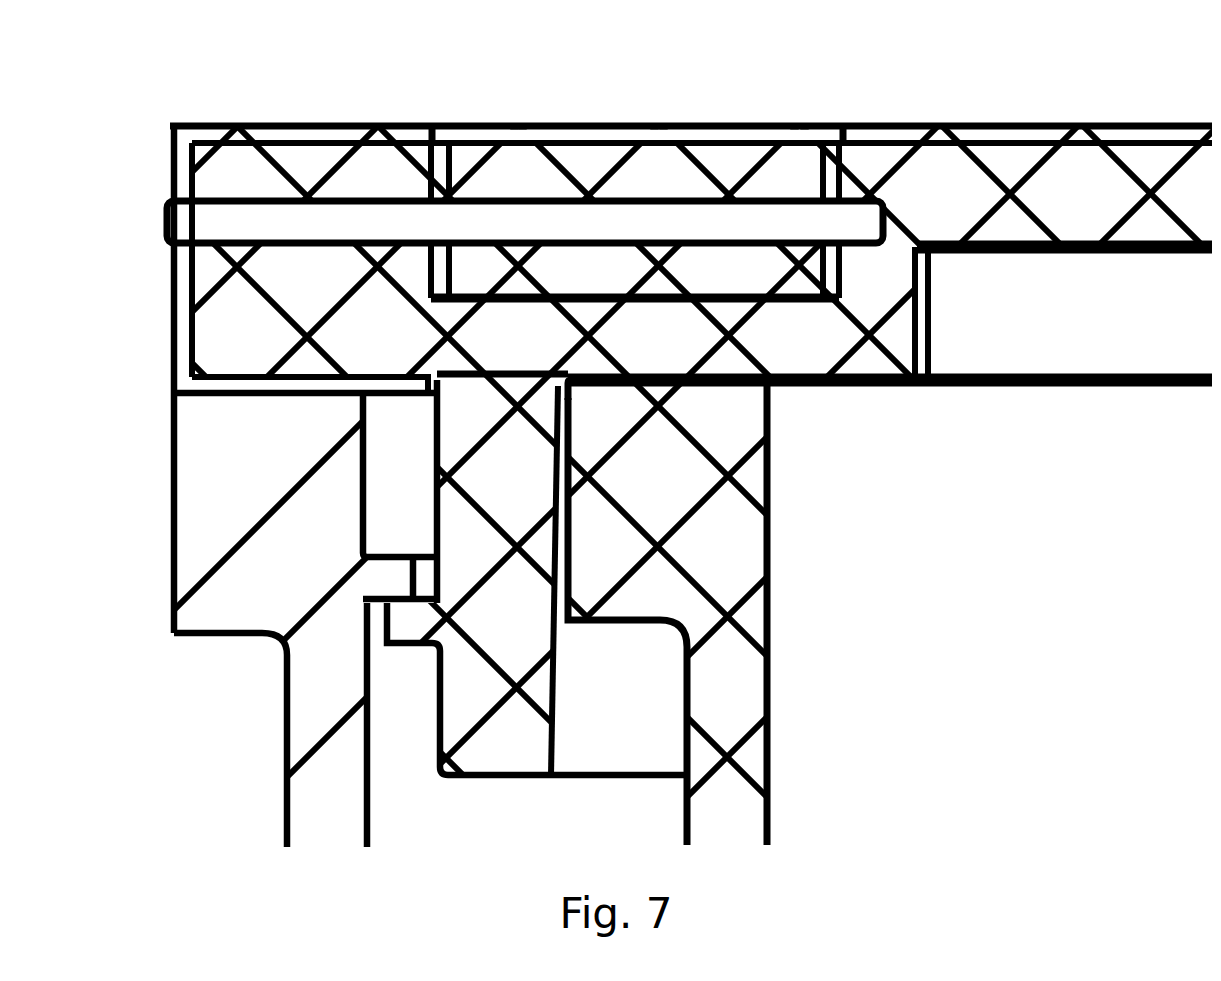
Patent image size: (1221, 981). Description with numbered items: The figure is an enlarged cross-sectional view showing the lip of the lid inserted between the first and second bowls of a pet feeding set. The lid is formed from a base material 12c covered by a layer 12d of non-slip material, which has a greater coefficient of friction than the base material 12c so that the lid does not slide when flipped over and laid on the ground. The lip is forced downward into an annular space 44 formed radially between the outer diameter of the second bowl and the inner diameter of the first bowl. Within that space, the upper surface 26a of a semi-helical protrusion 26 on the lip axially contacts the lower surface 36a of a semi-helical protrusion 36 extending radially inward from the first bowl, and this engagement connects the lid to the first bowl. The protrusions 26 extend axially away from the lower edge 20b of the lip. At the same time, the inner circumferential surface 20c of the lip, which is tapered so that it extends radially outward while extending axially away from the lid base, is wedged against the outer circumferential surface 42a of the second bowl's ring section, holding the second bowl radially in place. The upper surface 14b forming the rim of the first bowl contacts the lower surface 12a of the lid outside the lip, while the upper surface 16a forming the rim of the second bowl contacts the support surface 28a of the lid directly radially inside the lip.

The lower surface of lid 12a is at (265, 390).
The base material 12c is at (368, 170).
The layer of non-slip material 12d is at (316, 122).
The upper surface of first bowl 14b is at (240, 400).
The upper surface of second bowl 16a is at (612, 385).
The lower edge of annular lip 20b is at (485, 785).
The inner circumferential surface of lip 20c is at (557, 658).
The protrusion 26 is at (367, 657).
The upper surface of protrusion 26a is at (403, 622).
The support surface 28a is at (663, 363).
The protrusion 36 is at (387, 562).
The lower surface of protrusion 36a is at (403, 580).
The outer circumferential surface of ring section 42a is at (575, 560).
The annular space 44 is at (392, 440).